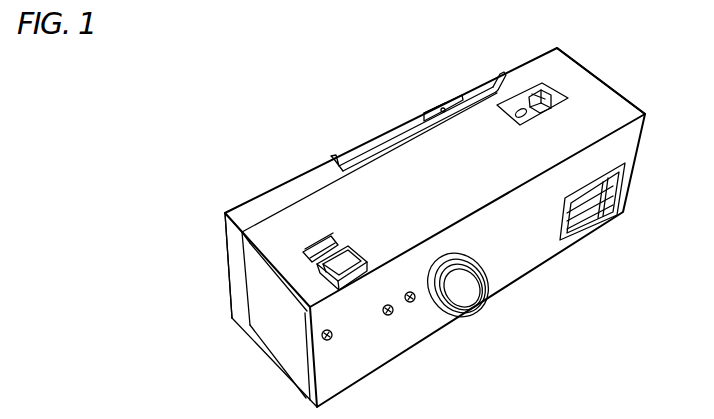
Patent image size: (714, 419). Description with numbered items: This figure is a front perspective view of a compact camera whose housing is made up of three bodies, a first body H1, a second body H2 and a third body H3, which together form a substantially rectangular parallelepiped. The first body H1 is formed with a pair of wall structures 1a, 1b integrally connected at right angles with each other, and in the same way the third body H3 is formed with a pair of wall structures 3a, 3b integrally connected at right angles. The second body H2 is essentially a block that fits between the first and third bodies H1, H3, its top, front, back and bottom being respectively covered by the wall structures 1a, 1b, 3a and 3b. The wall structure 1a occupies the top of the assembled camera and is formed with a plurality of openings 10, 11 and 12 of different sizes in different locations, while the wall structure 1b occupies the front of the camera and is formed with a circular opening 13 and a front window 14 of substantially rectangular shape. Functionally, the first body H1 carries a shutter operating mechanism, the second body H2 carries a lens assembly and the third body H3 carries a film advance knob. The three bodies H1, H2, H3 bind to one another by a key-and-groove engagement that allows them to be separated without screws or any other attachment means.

The wall structure 1a is at (580, 84).
The wall structure 1b is at (630, 134).
The first body H1 is at (622, 91).
The wall structure 3a is at (233, 241).
The wall structure 3b is at (287, 377).
The second body H2 is at (268, 326).
The third body H3 is at (222, 266).
The opening 10 is at (352, 281).
The opening 11 is at (318, 238).
The opening 12 is at (520, 102).
The circular opening 13 is at (462, 298).
The front window 14 is at (598, 210).